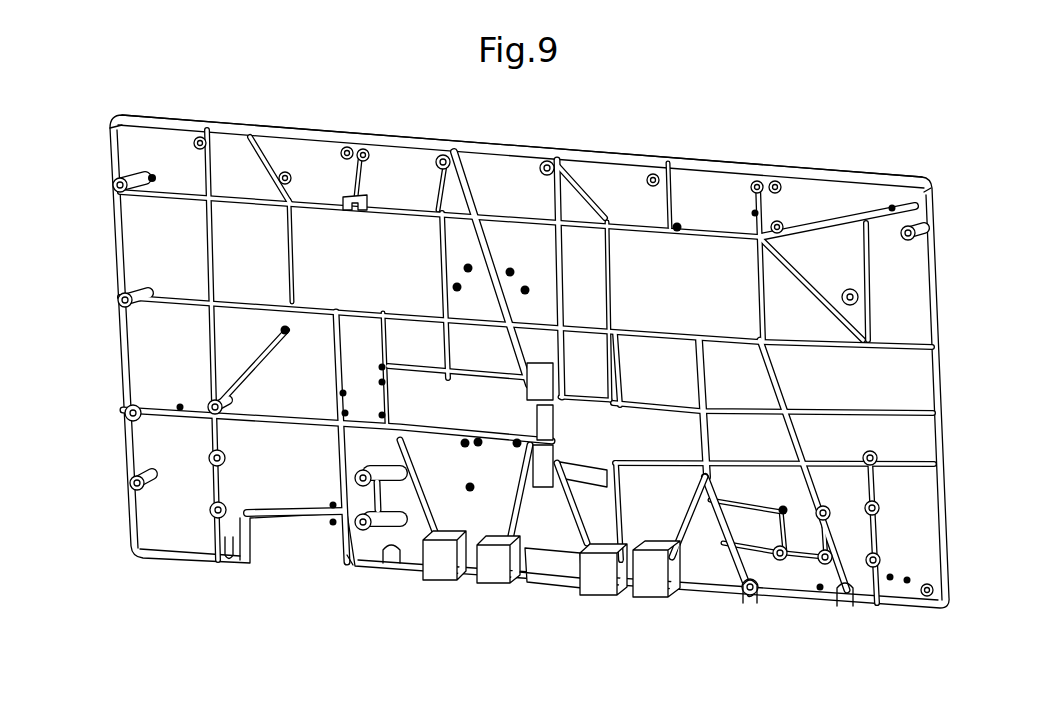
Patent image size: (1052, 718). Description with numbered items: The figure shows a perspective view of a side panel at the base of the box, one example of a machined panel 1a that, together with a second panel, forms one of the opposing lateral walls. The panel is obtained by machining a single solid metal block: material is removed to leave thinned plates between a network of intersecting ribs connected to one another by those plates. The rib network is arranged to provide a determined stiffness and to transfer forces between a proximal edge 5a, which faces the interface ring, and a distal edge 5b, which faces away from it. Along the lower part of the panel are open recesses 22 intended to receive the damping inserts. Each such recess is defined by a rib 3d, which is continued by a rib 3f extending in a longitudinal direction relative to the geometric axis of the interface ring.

The machined panel 1a is at (491, 380).
The proximal edge 5a is at (356, 587).
The distal edge 5b is at (681, 151).
The open recesses 22 is at (652, 594).
The rib 3d is at (674, 594).
The rib 3f is at (697, 503).